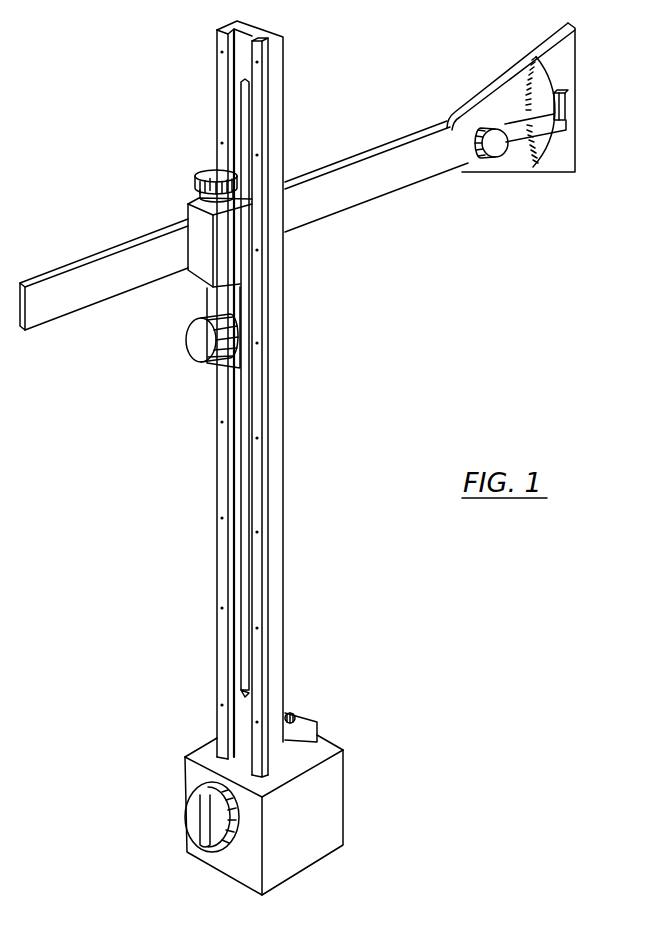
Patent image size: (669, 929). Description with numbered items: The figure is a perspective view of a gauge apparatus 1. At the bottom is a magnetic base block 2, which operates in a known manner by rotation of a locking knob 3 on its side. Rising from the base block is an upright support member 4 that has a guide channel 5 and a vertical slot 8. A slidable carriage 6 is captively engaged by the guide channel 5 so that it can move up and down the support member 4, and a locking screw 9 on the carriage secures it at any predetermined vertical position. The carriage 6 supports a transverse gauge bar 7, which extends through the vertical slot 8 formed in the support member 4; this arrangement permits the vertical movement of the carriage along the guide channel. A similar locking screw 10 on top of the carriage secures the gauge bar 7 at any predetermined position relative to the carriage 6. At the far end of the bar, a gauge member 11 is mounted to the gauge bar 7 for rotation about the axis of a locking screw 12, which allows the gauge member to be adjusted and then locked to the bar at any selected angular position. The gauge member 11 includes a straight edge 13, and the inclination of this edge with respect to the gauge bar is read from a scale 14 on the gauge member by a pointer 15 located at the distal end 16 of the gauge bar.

The gauge apparatus 1 is at (178, 456).
The magnetic base block 2 is at (330, 790).
The locking knob 3 is at (256, 836).
The support member 4 is at (277, 455).
The guide channel 5 is at (243, 55).
The slidable carriage 6 is at (242, 268).
The transverse gauge bar 7 is at (340, 183).
The vertical slot 8 is at (245, 107).
The locking screw 9 is at (204, 349).
The locking screw 10 is at (214, 176).
The gauge member 11 is at (510, 88).
The locking screw 12 is at (500, 152).
The straight edge 13 is at (577, 150).
The scale 14 is at (549, 67).
The pointer 15 is at (563, 107).
The distal end 16 is at (570, 120).